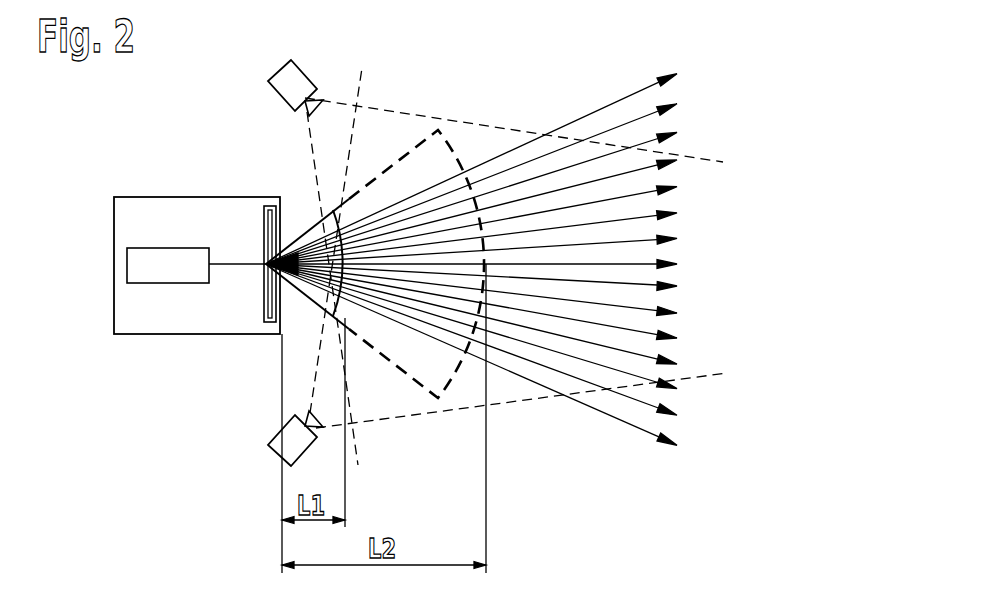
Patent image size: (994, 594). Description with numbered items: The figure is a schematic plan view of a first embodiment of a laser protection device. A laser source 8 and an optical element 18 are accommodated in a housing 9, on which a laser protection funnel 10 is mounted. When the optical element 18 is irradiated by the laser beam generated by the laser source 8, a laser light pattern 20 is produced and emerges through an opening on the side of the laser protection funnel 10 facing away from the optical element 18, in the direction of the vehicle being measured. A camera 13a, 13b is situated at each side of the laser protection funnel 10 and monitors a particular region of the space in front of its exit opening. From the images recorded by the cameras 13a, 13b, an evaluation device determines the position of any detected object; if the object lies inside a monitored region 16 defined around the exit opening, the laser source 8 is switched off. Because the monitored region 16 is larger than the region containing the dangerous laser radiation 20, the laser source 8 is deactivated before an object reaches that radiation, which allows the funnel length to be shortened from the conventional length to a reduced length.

The laser source 8 is at (167, 262).
The housing 9 is at (150, 334).
The laser protection funnel 10 is at (312, 296).
The camera 13a is at (273, 96).
The camera 13b is at (274, 450).
The monitored region 16 is at (465, 155).
The optical element 18 is at (270, 222).
The laser light pattern 20 is at (585, 96).